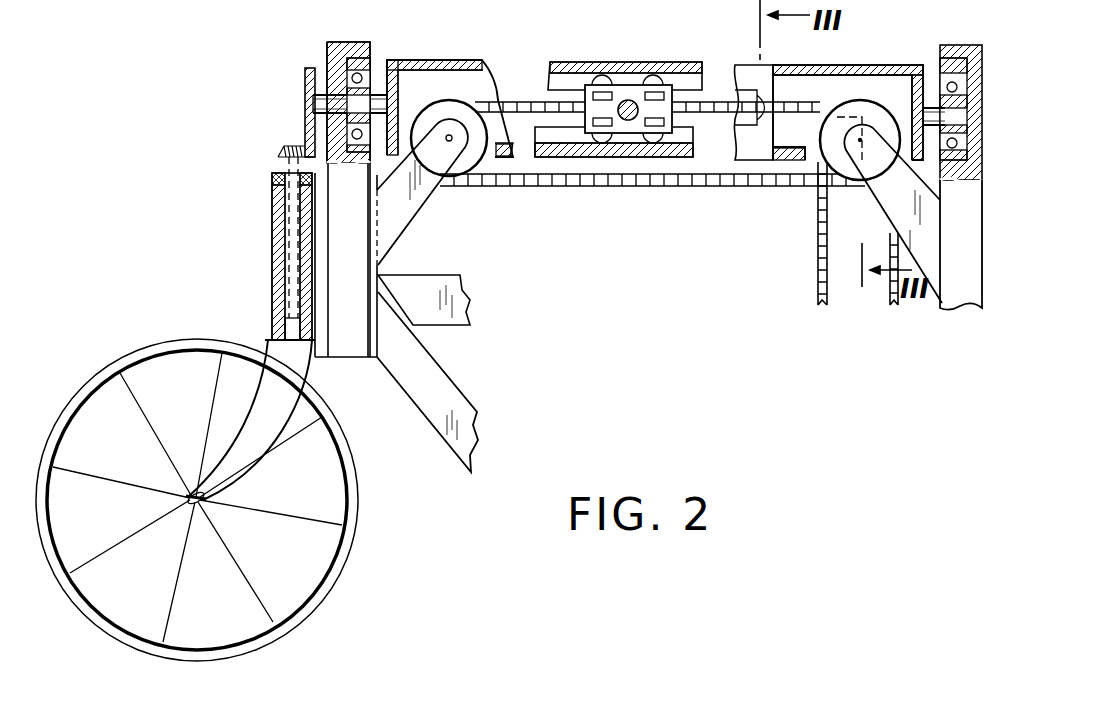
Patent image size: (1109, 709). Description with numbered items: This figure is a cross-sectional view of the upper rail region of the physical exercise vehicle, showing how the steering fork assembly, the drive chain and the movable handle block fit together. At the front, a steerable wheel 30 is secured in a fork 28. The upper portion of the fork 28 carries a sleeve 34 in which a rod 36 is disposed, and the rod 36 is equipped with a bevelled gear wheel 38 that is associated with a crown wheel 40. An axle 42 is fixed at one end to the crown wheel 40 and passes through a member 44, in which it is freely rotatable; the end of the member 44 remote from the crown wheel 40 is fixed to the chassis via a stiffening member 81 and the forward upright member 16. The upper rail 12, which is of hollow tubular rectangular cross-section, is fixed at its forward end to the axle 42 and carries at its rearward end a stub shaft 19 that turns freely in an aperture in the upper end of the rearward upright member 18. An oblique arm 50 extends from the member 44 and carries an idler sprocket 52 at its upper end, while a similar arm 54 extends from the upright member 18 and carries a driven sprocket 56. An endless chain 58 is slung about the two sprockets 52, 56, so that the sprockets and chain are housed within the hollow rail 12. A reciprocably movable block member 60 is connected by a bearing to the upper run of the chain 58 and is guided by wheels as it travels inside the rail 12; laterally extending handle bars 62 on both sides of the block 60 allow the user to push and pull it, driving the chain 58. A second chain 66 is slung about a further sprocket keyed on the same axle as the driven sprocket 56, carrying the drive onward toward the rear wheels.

The upper rail 12 is at (577, 62).
The forward upright member 16 is at (440, 410).
The rearward upright member 18 is at (960, 297).
The stub shaft 19 is at (937, 66).
The fork 28 is at (268, 430).
The steerable wheel 30 is at (98, 375).
The sleeve 34 is at (272, 208).
The rod 36 is at (292, 242).
The bevelled gear wheel 38 is at (283, 147).
The crown wheel 40 is at (312, 98).
The axle 42 is at (372, 103).
The member 44 is at (362, 278).
The oblique arm 50 is at (420, 203).
The idler sprocket 52 is at (433, 107).
The arm 54 is at (908, 197).
The driven sprocket 56 is at (878, 120).
The endless chain 58 is at (648, 186).
The block member 60 is at (620, 92).
The handle bars 62 is at (627, 122).
The second chain 66 is at (818, 282).
The stiffening member 81 is at (445, 292).